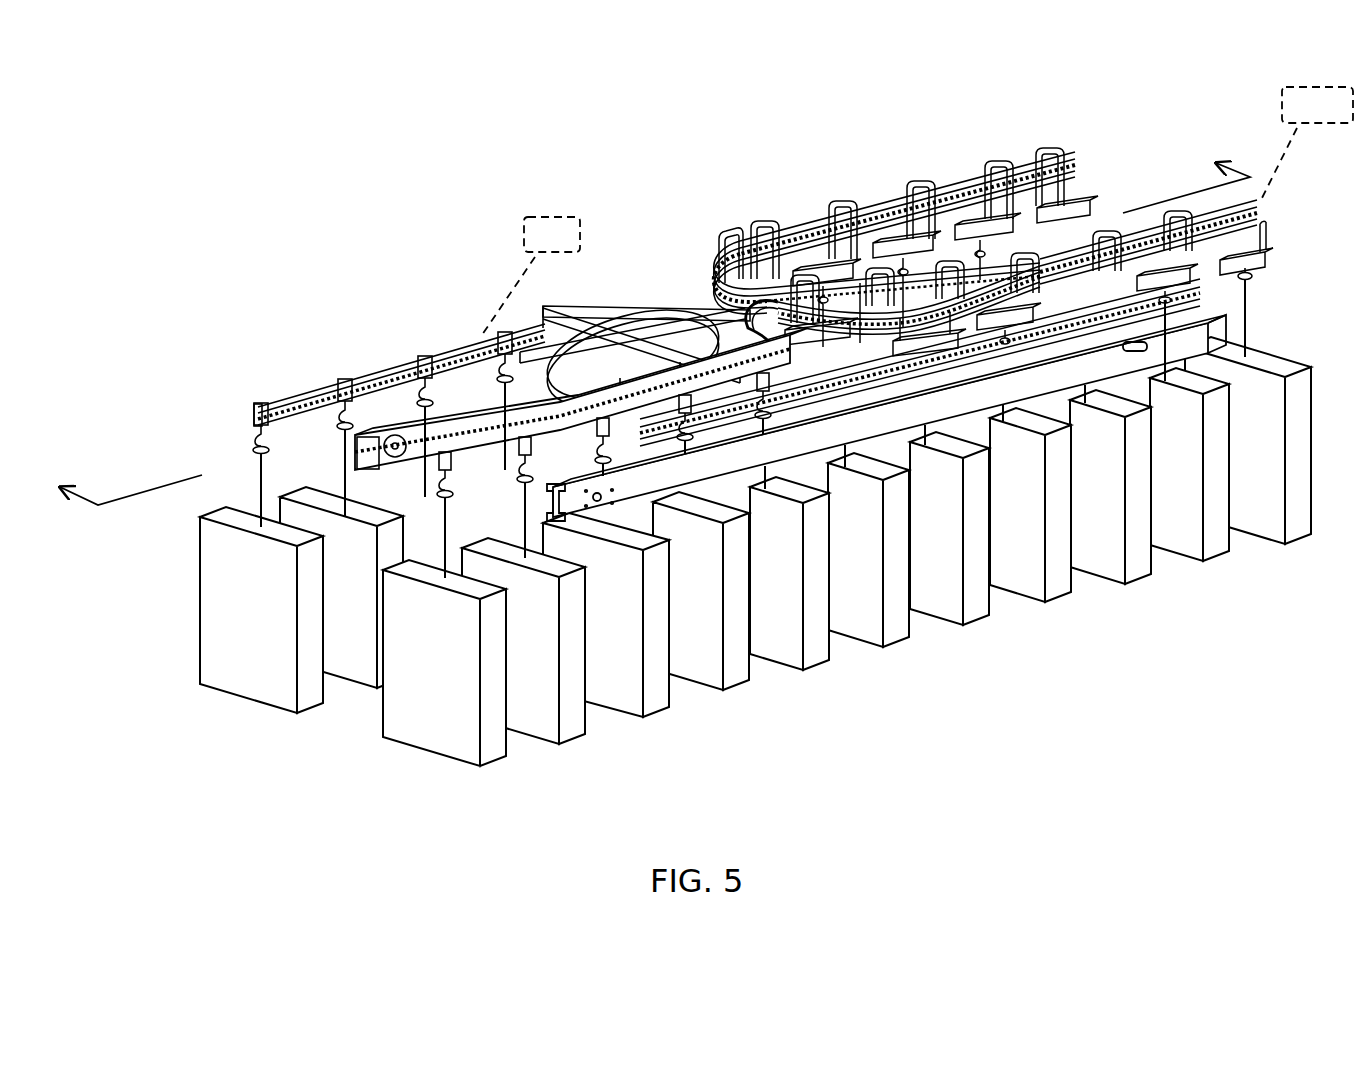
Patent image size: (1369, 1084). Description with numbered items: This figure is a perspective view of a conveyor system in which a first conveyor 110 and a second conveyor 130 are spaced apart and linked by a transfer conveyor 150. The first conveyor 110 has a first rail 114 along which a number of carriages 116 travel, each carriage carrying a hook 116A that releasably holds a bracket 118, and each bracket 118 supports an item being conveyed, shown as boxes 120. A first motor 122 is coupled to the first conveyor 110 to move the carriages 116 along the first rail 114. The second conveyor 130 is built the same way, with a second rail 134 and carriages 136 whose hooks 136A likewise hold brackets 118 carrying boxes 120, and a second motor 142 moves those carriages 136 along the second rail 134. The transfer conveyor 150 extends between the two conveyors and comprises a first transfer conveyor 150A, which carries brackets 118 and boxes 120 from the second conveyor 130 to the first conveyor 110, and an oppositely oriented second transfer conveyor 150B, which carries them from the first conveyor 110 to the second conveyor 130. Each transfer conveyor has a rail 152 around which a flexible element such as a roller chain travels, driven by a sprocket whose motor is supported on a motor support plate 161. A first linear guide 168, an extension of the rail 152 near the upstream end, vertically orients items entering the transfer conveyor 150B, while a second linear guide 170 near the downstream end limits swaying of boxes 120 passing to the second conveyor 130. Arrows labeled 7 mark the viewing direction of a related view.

The first conveyor 110 is at (972, 128).
The first rail 114 is at (1041, 156).
The carriages 116 is at (1285, 235).
The hook 116A is at (1253, 268).
The bracket 118 is at (1251, 312).
The boxes 120 is at (1303, 410).
The first motor 122 is at (1307, 142).
The second conveyor 130 is at (450, 313).
The second rail 134 is at (388, 372).
The carriages 136 is at (249, 436).
The hook 136A is at (338, 433).
The second motor 142 is at (531, 276).
The transfer conveyor 150 is at (703, 225).
The first transfer conveyor 150A is at (1066, 413).
The second transfer conveyor 150B is at (410, 419).
The rail 152 is at (610, 413).
The motor support plate 161 is at (627, 495).
The first linear guide 168 is at (566, 512).
The second linear guide 170 is at (1150, 300).
The section view arrow FIG. 7 is at (658, 323).